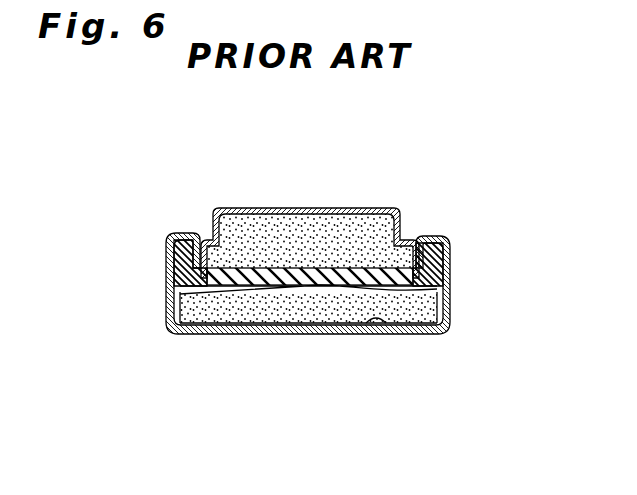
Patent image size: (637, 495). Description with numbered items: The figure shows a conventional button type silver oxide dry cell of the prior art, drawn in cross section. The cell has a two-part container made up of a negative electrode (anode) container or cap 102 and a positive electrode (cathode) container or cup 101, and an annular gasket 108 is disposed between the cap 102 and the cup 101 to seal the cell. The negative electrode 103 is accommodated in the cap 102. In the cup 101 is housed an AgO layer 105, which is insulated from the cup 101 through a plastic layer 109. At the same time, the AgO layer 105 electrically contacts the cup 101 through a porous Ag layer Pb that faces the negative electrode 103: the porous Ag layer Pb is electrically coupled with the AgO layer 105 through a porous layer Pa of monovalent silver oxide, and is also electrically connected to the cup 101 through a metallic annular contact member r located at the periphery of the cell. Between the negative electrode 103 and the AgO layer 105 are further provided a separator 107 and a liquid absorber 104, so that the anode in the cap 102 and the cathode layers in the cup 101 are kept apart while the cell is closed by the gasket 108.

The cup 101 is at (450, 319).
The cap 102 is at (366, 212).
The negative electrode 103 is at (315, 236).
The liquid absorber 104 is at (378, 272).
The AgO layer 105 is at (288, 305).
The separator 107 is at (250, 285).
The annular gasket 108 is at (448, 258).
The plastic layer 109 is at (377, 321).
The porous layer of monovalent silver oxide Pa is at (412, 305).
The porous Ag layer Pb is at (213, 292).
The metallic annular contact member r is at (448, 289).